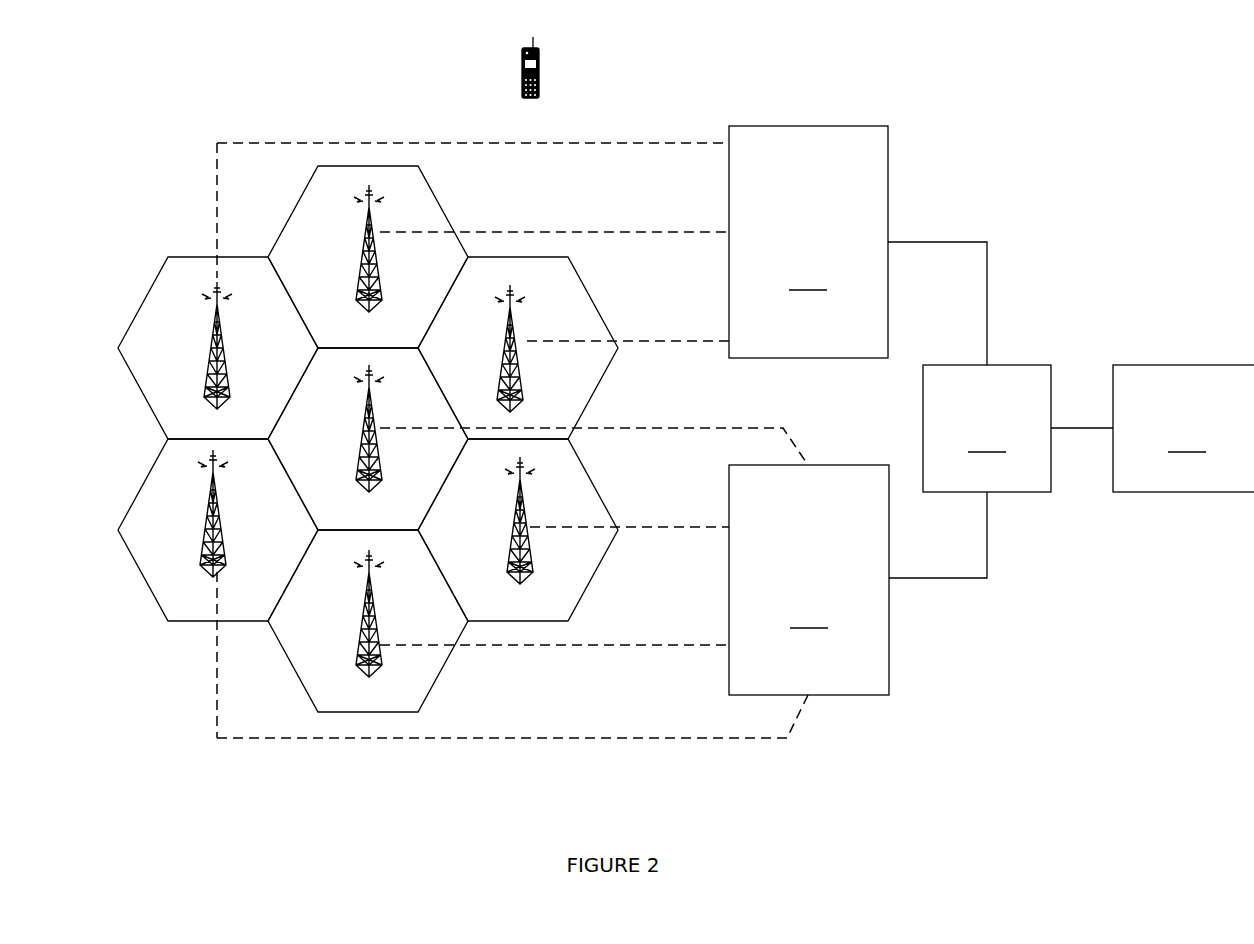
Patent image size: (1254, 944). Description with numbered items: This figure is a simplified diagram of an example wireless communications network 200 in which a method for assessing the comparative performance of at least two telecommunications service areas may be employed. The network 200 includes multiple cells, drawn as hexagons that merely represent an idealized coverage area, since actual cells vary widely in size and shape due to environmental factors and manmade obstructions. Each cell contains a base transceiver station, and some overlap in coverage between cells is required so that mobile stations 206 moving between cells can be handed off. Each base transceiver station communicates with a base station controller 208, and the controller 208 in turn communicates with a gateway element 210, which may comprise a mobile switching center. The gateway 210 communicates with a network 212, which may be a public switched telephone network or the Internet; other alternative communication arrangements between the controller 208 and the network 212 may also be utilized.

The wireless communications network 200 is at (212, 778).
The mobile station 206 is at (542, 59).
The base station controller 208 is at (809, 410).
The gateway element 210 is at (987, 428).
The network 212 is at (1183, 428).